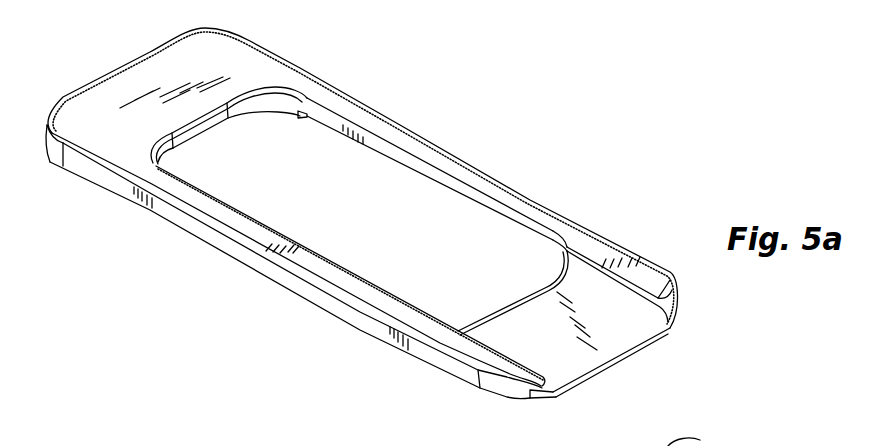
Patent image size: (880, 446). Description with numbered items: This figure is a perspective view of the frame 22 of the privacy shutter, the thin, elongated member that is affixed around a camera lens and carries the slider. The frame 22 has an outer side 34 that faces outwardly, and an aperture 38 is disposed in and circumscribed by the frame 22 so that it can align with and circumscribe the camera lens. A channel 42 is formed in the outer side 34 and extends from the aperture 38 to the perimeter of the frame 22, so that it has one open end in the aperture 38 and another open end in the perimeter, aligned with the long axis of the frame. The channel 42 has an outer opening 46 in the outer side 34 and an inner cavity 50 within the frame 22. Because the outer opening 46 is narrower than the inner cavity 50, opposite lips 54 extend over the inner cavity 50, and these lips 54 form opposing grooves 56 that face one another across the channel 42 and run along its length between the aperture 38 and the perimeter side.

The frame 22 is at (127, 140).
The outer side 34 is at (562, 231).
The aperture 38 is at (402, 163).
The channel 42 is at (620, 320).
The outer opening 46 is at (646, 295).
The inner cavity 50 is at (460, 333).
The lips 54 is at (592, 267).
The grooves 56 is at (677, 308).